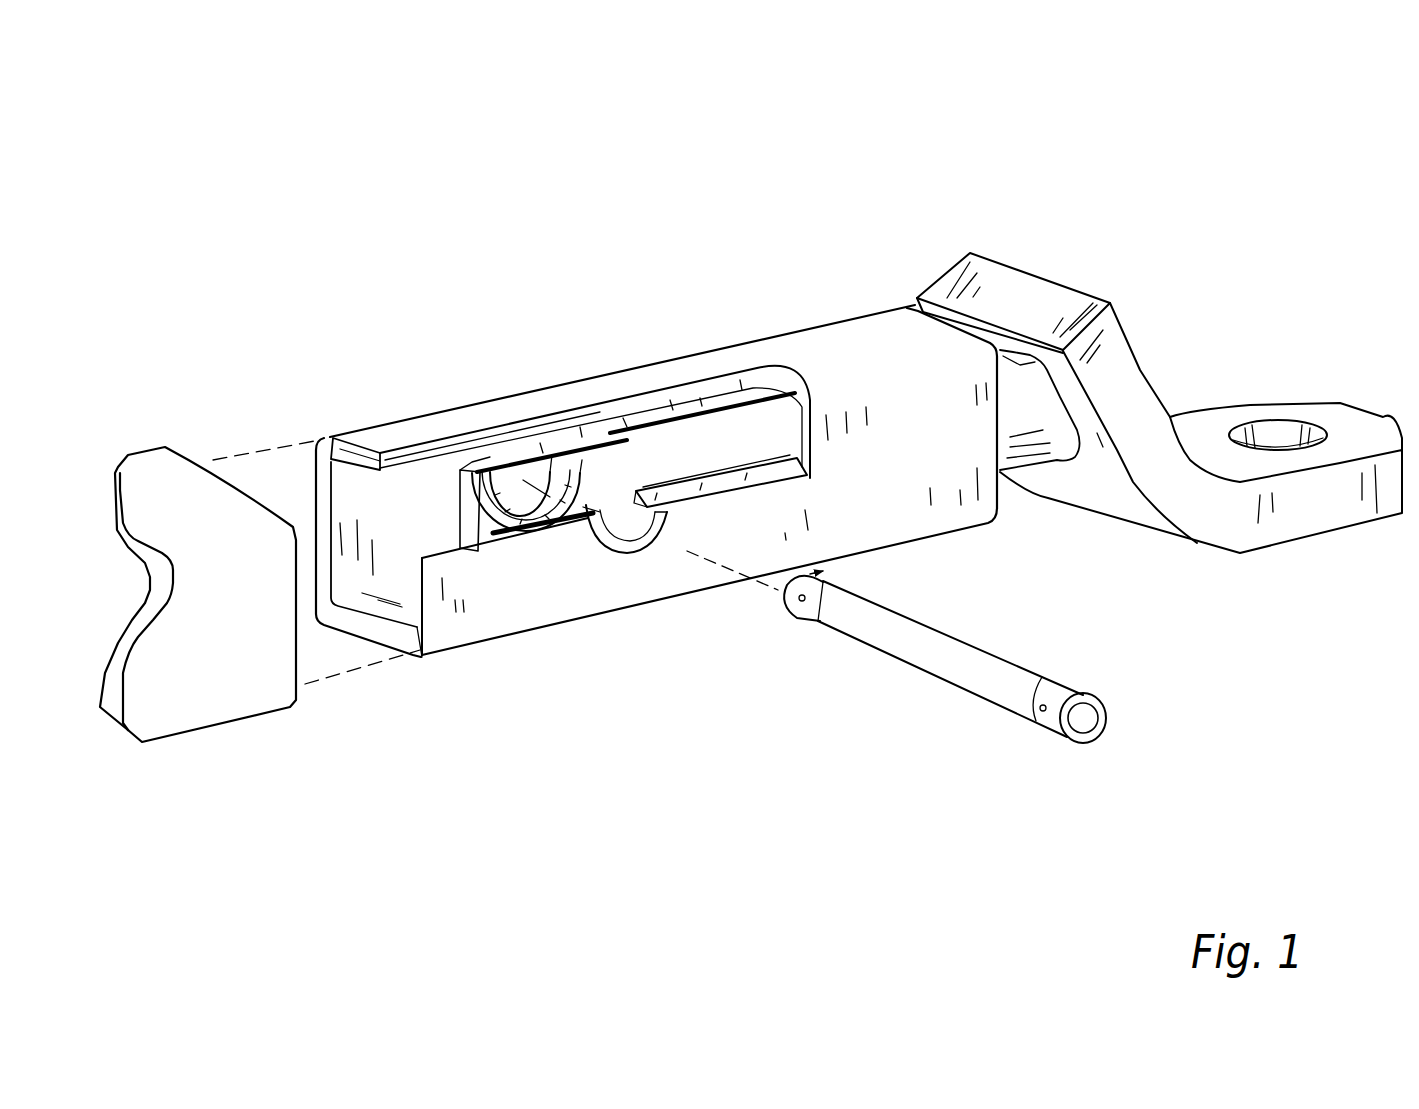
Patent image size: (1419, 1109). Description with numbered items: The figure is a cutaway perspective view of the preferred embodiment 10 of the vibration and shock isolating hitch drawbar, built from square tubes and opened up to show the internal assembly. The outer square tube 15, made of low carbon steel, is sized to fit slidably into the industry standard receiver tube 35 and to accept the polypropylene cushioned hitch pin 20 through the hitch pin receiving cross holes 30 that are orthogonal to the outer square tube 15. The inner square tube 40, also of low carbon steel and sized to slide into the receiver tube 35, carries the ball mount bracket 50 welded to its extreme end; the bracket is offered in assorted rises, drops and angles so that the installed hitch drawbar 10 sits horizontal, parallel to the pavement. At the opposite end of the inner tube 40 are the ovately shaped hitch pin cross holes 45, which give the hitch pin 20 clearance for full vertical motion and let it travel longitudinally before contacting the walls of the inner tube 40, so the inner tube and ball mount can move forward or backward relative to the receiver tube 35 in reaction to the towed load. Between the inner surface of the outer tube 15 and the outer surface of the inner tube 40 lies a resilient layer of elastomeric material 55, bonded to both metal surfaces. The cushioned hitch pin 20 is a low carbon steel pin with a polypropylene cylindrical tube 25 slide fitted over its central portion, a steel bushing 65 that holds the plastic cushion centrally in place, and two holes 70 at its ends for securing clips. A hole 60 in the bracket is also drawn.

The hitch drawbar 10 is at (357, 155).
The outer square tube 15 is at (853, 340).
The polypropylene cushioned hitch pin 20 is at (1113, 734).
The polypropylene cylindrical tube 25 is at (925, 652).
The hitch pin receiving cross holes 30 is at (615, 547).
The receiver tube 35 is at (260, 677).
The inner square tube 40 is at (1023, 413).
The hitch pin cross holes 45 is at (556, 462).
The ball mount bracket 50 is at (1097, 297).
The elastomeric material layer 55 is at (745, 372).
The drawbar hole 60 is at (1290, 430).
The steel bushing 65 is at (1063, 677).
The holes 70 is at (783, 608).